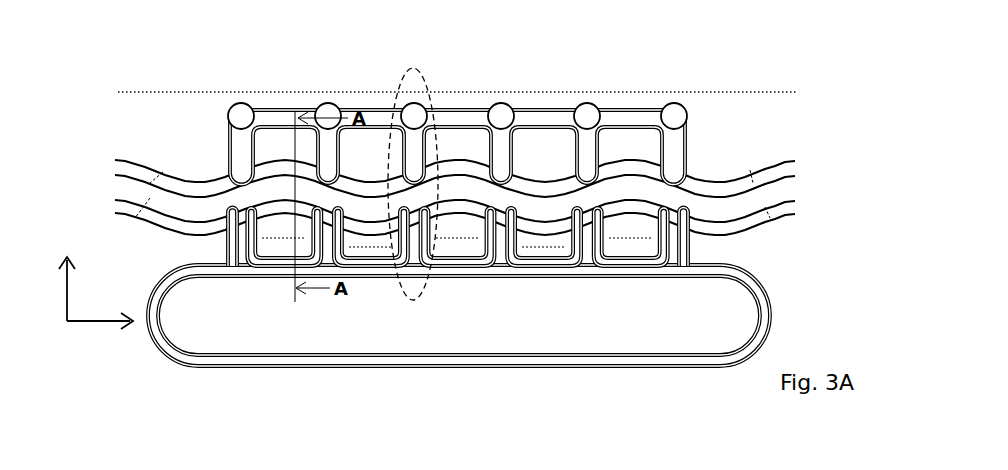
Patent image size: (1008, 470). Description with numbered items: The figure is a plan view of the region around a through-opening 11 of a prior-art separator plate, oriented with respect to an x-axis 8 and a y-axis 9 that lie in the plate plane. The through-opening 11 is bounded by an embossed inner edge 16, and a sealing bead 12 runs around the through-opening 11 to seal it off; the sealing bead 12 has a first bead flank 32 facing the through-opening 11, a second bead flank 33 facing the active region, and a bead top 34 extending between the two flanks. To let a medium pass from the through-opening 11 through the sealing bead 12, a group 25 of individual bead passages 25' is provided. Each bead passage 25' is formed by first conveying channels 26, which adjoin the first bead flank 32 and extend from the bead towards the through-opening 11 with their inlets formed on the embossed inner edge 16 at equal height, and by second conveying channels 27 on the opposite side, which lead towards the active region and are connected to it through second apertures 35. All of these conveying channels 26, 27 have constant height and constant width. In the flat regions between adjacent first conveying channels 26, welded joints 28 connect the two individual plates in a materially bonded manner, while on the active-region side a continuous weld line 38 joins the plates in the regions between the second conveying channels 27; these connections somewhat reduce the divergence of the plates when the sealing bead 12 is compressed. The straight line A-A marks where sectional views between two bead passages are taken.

The x-axis 8 is at (66, 277).
The y-axis 9 is at (81, 325).
The through-opening 11 is at (451, 331).
The sealing bead 12 is at (188, 202).
The embossed inner edge 16 is at (573, 356).
The bead passage 25 is at (458, 165).
The bead passage 25' is at (424, 165).
The first conveying channel 26 is at (237, 242).
The second conveying channel 27 is at (242, 157).
The welded joint 28 is at (373, 248).
The first bead flank 32 is at (782, 209).
The second bead flank 33 is at (778, 170).
The bead top 34 is at (784, 190).
The second aperture 35 is at (501, 113).
The continuous weld line 38 is at (311, 90).